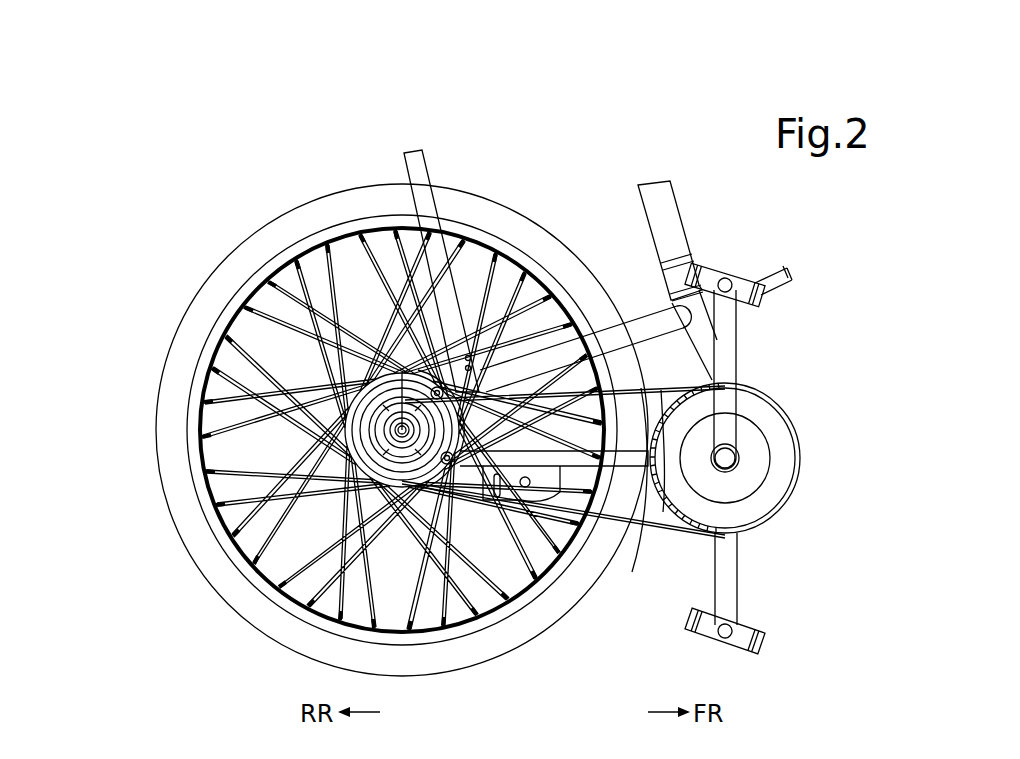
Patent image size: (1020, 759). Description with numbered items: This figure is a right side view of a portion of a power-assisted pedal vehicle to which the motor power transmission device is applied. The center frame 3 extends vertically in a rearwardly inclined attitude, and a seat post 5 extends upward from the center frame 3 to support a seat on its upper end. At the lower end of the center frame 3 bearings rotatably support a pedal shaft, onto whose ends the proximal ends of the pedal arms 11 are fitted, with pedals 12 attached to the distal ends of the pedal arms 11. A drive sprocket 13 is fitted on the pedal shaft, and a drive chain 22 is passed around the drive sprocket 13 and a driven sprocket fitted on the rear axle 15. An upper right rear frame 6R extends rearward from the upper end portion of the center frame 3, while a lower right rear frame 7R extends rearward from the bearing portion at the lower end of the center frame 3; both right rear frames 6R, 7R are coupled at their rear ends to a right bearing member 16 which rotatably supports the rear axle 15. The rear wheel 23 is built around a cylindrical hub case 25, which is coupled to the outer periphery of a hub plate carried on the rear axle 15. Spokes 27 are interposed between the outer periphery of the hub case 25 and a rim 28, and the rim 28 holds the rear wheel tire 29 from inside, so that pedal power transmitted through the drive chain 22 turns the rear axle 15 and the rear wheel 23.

The rear wheel 23 is at (196, 242).
The rear wheel tire 29 is at (217, 593).
The rim 28 is at (210, 512).
The spokes 27 is at (237, 467).
The hub case 25 is at (390, 380).
The right bearing member 16 is at (383, 347).
The rear axle 15 is at (420, 360).
The right rear frame 6R is at (548, 330).
The right rear frame 7R is at (600, 468).
The seat post 5 is at (672, 204).
The center frame 3 is at (697, 352).
The pedal arm 11 is at (738, 336).
The pedal 12 is at (740, 278).
The drive sprocket 13 is at (663, 512).
The drive chain 22 is at (632, 572).